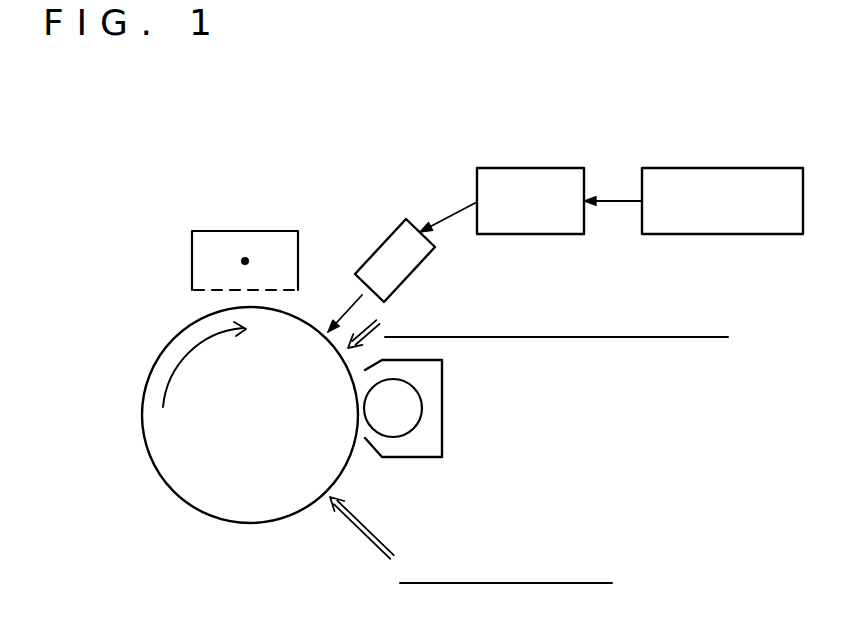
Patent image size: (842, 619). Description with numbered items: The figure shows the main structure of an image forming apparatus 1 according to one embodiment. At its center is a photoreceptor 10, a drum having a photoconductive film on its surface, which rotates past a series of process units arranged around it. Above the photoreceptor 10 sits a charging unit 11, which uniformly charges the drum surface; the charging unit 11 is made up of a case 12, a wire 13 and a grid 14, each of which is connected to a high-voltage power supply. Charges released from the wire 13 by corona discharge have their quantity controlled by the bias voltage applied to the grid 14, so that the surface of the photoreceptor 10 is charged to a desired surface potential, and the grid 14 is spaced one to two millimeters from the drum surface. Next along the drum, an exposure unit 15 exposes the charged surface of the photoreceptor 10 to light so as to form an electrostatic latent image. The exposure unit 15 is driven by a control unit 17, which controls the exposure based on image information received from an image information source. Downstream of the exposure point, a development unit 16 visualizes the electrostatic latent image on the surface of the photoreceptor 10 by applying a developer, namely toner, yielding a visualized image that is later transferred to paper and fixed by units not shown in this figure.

The image forming apparatus 1 is at (177, 112).
The photoreceptor 10 is at (158, 477).
The charging unit 11 is at (195, 246).
The case 12 is at (208, 231).
The wire 13 is at (245, 257).
The grid 14 is at (207, 292).
The exposure unit 15 is at (387, 240).
The development unit 16 is at (442, 408).
The control unit 17 is at (547, 168).